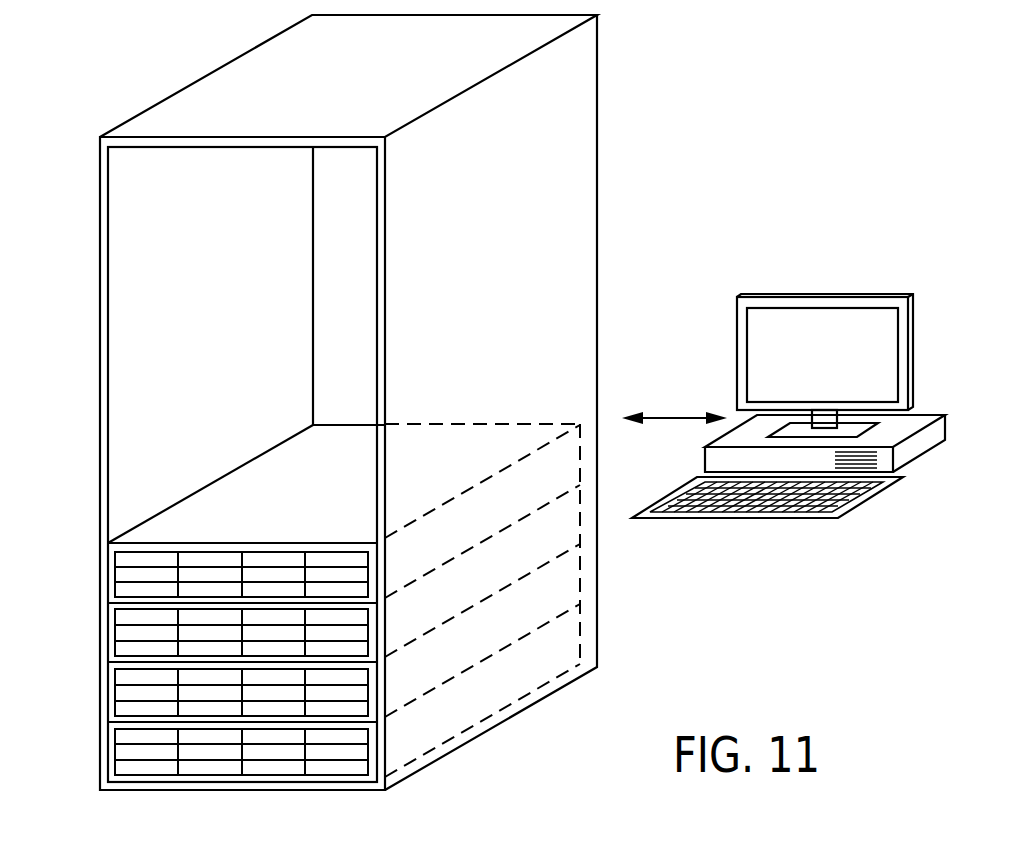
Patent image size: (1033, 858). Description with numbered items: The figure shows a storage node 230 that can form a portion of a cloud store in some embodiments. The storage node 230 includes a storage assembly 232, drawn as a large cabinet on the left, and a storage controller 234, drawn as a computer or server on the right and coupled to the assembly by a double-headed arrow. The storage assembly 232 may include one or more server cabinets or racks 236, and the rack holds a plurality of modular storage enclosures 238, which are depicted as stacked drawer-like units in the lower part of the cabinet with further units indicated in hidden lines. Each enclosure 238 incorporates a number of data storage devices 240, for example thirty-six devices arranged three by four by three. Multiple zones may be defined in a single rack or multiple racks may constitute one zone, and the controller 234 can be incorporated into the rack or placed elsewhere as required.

The storage node 230 is at (790, 101).
The storage assembly 232 is at (245, 77).
The storage controller 234 is at (850, 295).
The server cabinet 236 is at (98, 402).
The modular storage enclosure 238 is at (298, 488).
The data storage device 240 is at (155, 768).